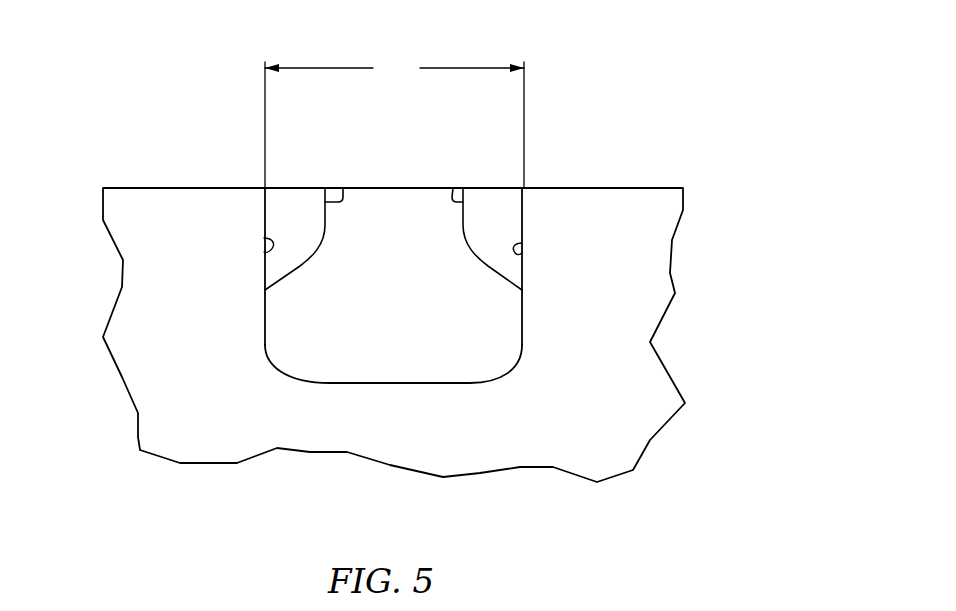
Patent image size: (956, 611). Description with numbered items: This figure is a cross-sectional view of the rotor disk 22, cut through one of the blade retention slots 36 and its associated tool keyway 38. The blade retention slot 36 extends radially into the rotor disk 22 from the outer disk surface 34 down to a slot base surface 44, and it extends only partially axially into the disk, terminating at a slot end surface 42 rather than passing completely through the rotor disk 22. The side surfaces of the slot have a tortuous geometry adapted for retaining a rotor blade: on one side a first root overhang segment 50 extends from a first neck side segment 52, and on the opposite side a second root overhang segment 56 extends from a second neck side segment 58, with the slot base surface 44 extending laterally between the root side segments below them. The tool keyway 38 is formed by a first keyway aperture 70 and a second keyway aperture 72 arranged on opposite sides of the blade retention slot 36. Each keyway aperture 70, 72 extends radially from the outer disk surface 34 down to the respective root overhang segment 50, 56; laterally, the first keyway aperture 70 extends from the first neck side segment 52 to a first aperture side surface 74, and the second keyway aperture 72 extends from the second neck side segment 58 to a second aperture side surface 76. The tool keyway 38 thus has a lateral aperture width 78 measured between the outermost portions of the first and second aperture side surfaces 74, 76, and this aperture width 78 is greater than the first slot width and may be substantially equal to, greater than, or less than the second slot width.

The rotor disk 22 is at (740, 221).
The outer disk surface 34 is at (637, 188).
The blade retention slot 36 is at (382, 218).
The tool keyway 38 is at (496, 219).
The slot end surface 42 is at (277, 347).
The slot base surface 44 is at (456, 383).
The first root overhang segment 50 is at (290, 263).
The first neck side segment 52 is at (343, 188).
The second root overhang segment 56 is at (496, 263).
The second neck side segment 58 is at (453, 188).
The first keyway aperture 70 is at (281, 224).
The second keyway aperture 72 is at (500, 243).
The first aperture side surface 74 is at (264, 238).
The second aperture side surface 76 is at (522, 243).
The aperture width 78 is at (394, 122).